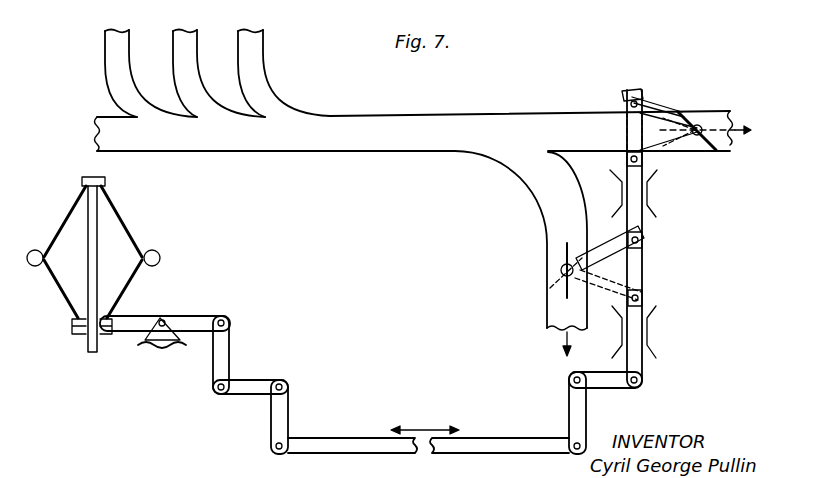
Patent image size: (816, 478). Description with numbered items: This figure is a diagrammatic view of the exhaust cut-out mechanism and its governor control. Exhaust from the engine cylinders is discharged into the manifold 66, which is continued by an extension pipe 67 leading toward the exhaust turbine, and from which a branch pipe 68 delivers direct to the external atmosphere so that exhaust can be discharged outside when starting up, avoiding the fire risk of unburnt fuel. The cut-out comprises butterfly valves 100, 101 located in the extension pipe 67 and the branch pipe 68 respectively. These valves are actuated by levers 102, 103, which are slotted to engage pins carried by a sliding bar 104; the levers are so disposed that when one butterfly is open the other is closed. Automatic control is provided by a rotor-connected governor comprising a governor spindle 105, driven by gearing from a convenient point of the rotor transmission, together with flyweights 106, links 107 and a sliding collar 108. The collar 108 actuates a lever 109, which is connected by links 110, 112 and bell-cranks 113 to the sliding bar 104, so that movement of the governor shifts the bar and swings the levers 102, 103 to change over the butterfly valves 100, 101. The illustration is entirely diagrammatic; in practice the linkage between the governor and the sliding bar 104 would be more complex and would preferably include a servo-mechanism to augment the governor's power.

The manifold 66 is at (303, 135).
The extension pipe 67 is at (708, 110).
The branch pipe 68 is at (552, 310).
The butterfly valve 100 is at (711, 140).
The butterfly valve 101 is at (553, 257).
The lever 102 is at (645, 108).
The lever 103 is at (590, 265).
The sliding bar 104 is at (645, 356).
The governor spindle 105 is at (97, 228).
The flyweights 106 is at (160, 257).
The links 107 is at (134, 230).
The sliding collar 108 is at (78, 336).
The lever 109 is at (200, 318).
The link 110 is at (228, 360).
The link 112 is at (349, 440).
The bell-cranks 113 is at (281, 416).